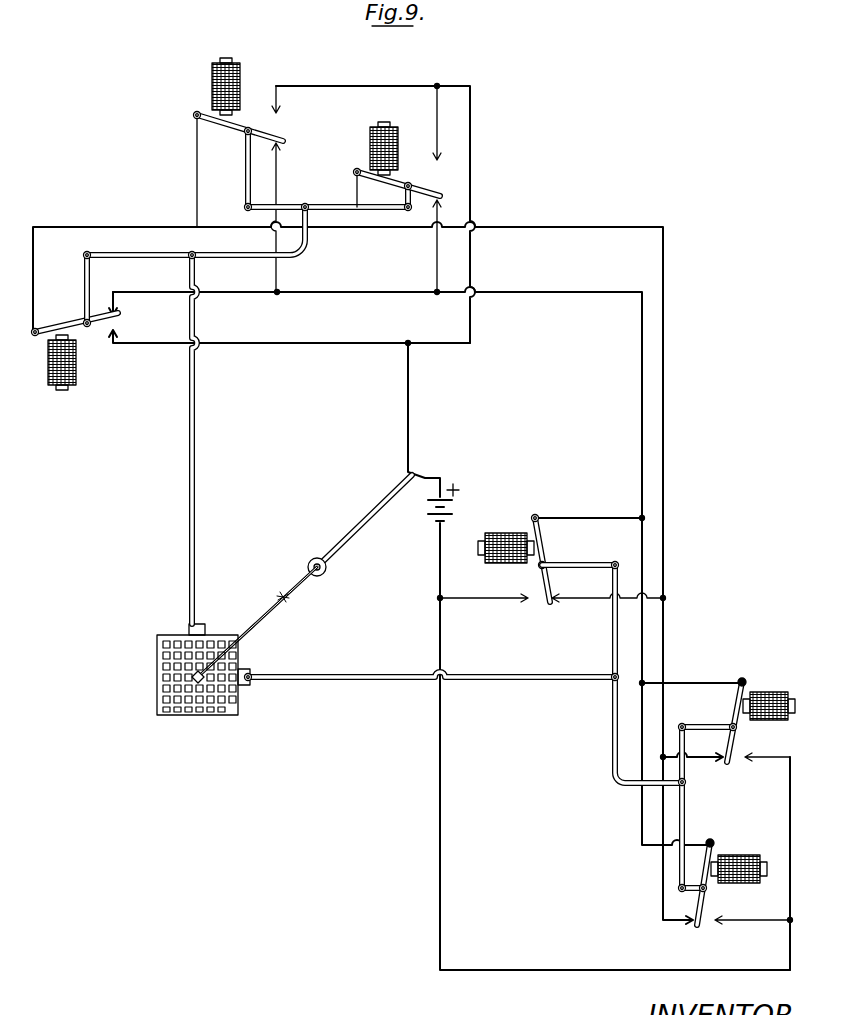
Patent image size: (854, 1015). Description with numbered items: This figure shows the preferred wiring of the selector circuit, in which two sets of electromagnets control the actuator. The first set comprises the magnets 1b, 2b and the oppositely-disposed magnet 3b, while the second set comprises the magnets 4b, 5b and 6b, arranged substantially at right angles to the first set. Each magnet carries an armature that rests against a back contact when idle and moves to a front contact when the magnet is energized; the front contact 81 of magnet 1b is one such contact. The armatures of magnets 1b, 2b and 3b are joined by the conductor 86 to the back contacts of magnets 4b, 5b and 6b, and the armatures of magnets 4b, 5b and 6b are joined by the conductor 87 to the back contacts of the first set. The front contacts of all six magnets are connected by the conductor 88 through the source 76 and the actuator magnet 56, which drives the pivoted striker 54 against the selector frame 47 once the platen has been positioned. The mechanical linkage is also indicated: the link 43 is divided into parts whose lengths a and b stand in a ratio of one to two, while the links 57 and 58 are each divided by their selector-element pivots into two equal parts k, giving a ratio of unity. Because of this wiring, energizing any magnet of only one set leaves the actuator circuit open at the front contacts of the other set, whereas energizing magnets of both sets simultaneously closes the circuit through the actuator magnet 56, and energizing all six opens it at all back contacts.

The electromagnet 1b is at (397, 166).
The electromagnet 2b is at (301, 142).
The electromagnet 3b is at (75, 324).
The electromagnet 4b is at (723, 882).
The electromagnet 5b is at (718, 718).
The electromagnet 6b is at (560, 556).
The contact lever 43 is at (382, 214).
The selector frame 47 is at (205, 716).
The striker 54 is at (256, 622).
The actuator electromagnet 56 is at (321, 578).
The link 57 is at (246, 257).
The link 58 is at (612, 716).
The source 76 is at (431, 509).
The front contact 81 is at (373, 214).
The conductor 86 is at (560, 226).
The conductor 87 is at (559, 296).
The conductor 88 is at (443, 792).
The link part length a is at (496, 469).
The link part length b is at (512, 525).
The link part length k is at (389, 492).